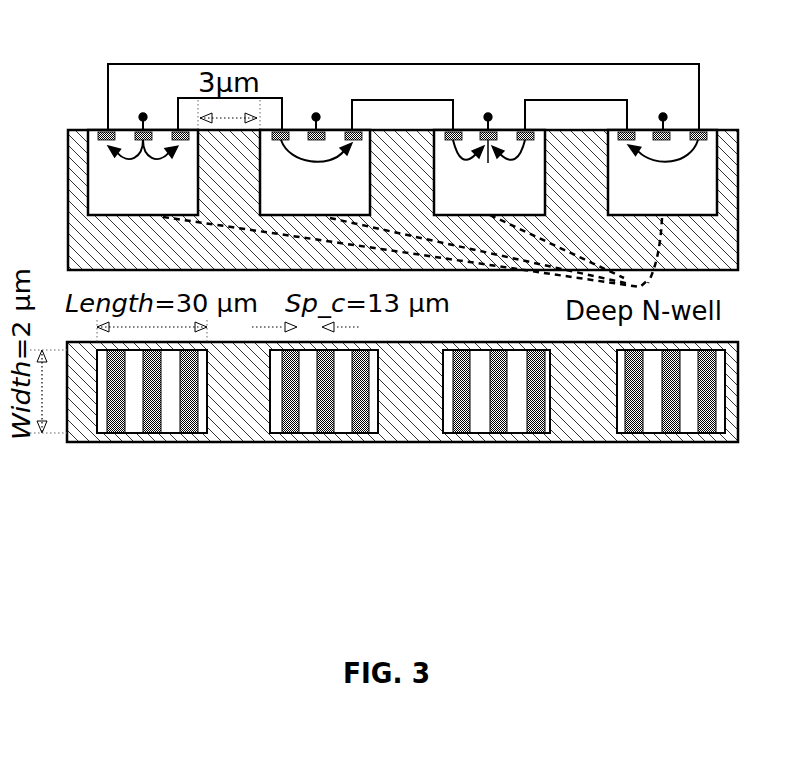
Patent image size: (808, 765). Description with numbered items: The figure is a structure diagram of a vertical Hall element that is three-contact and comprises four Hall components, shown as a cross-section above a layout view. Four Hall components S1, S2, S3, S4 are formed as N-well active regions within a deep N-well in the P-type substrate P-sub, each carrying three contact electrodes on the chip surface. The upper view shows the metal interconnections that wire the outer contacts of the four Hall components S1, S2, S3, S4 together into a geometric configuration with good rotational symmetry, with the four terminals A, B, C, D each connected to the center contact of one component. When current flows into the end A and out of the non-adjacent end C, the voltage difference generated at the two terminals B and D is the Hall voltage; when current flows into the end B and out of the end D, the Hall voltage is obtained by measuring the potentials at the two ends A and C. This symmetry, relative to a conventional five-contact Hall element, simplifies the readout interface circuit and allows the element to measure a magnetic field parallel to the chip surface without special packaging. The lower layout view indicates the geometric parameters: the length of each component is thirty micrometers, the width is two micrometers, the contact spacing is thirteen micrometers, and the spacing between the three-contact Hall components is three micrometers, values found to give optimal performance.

The end A is at (143, 105).
The end B is at (316, 105).
The end C is at (488, 105).
The end D is at (663, 105).
The first Hall component S1 is at (143, 172).
The second Hall component S2 is at (315, 172).
The third Hall component S3 is at (489, 172).
The fourth Hall component S4 is at (662, 172).
The P-type substrate P-sub is at (403, 200).